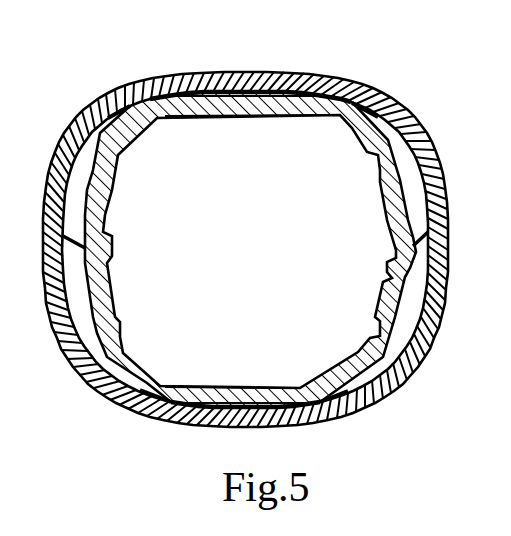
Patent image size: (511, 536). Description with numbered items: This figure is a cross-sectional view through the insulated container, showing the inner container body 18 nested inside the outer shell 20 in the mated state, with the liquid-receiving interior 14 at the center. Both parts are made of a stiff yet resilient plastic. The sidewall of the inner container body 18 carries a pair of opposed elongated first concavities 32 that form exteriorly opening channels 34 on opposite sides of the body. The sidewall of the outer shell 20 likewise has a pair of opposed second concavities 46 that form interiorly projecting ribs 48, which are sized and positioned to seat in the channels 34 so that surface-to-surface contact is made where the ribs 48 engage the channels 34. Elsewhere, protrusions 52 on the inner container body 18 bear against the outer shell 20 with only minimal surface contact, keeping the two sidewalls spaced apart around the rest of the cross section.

The interior 14 is at (259, 269).
The inner container body 18 is at (150, 142).
The outer shell 20 is at (442, 333).
The first concavities 32 is at (204, 118).
The channels 34 is at (291, 100).
The second concavities 46 is at (283, 96).
The ribs 48 is at (256, 92).
The protrusions 52 is at (440, 183).